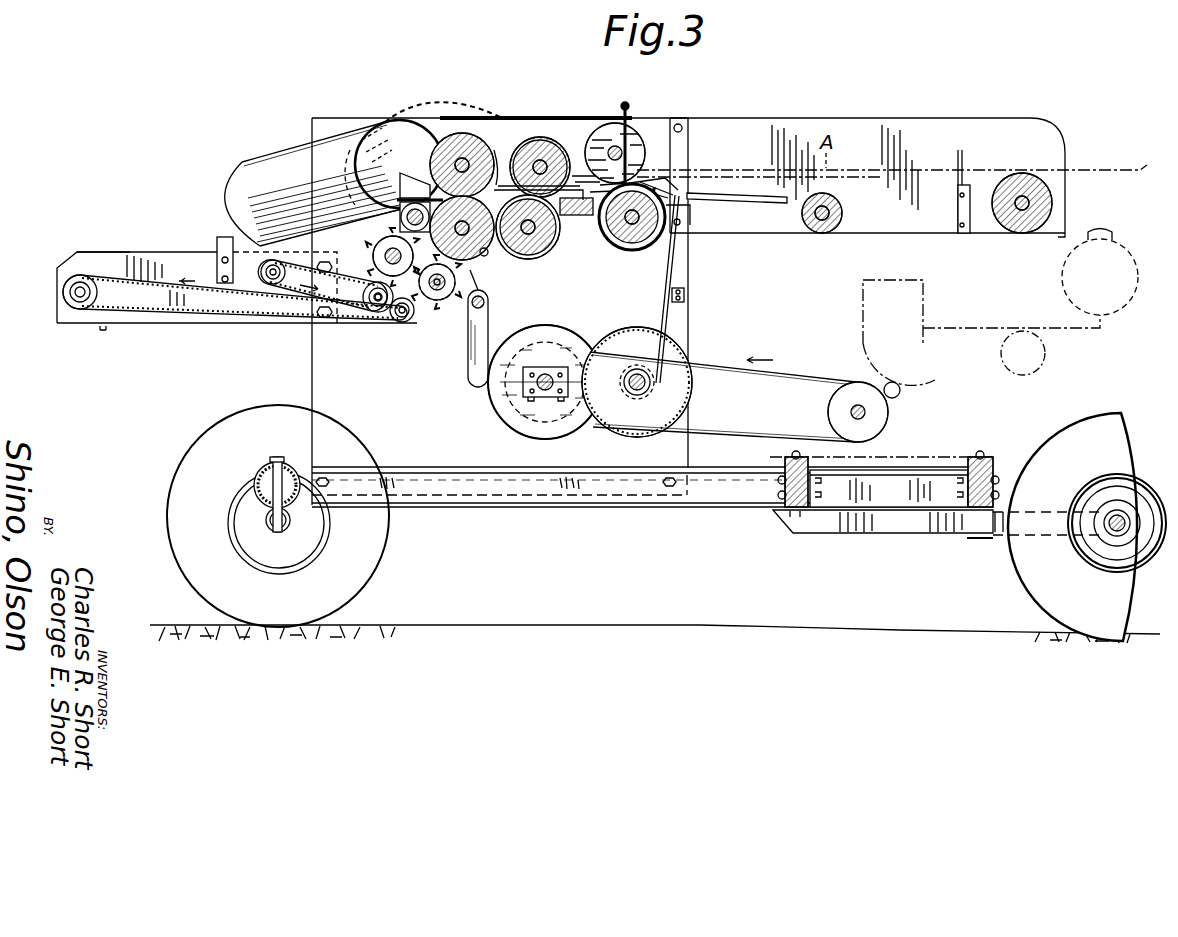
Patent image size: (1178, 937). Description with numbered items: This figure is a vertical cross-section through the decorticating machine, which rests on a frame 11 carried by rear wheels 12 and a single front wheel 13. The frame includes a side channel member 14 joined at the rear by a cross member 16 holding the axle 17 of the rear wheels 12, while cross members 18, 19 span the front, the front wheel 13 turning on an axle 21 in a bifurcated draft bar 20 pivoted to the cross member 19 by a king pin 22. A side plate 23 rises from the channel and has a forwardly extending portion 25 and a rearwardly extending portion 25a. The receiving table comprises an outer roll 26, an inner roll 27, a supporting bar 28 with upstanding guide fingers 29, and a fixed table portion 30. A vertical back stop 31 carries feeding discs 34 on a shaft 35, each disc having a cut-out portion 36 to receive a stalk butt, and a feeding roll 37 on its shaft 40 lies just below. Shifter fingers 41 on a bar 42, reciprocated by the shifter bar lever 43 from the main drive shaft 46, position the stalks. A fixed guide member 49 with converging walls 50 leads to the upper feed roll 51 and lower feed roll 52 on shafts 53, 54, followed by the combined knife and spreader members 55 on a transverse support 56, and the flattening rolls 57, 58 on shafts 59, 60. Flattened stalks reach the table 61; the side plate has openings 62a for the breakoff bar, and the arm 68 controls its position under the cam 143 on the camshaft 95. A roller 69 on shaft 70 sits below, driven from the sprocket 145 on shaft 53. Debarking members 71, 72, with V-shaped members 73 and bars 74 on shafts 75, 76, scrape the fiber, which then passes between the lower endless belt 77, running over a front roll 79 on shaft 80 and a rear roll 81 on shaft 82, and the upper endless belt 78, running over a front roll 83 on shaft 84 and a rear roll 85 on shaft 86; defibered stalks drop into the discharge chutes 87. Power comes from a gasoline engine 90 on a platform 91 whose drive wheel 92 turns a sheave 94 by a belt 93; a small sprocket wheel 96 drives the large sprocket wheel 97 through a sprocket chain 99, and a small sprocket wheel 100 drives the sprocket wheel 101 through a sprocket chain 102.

The frame 11 is at (565, 508).
The rear wheels 12 is at (366, 598).
The front wheel 13 is at (1012, 566).
The side channel member 14 is at (442, 508).
The cross member 16 is at (264, 470).
The axle 17 is at (292, 521).
The cross member 18 is at (994, 463).
The cross member 19 is at (784, 462).
The bifurcated draft bar 20 is at (838, 535).
The axle 21 is at (1105, 527).
The king pin 22 is at (796, 455).
The side plate 23 is at (328, 388).
The forwardly extending portion 25 is at (1043, 132).
The rearwardly extending portion 25a is at (128, 252).
The outer roll 26 is at (1052, 199).
The inner roll 27 is at (843, 210).
The supporting bar 28 is at (958, 178).
The guide fingers 29 is at (963, 160).
The fixed table portion 30 is at (746, 193).
The back stop 31 is at (642, 135).
The feeding discs 34 is at (675, 136).
The shaft 35 is at (625, 104).
The cut-out portions 36 is at (660, 176).
The feeding roll 37 is at (630, 250).
The shaft 40 is at (612, 242).
The shifter fingers 41 is at (672, 188).
The bar 42 is at (680, 212).
The shifter bar lever 43 is at (672, 318).
The main drive shaft 46 is at (632, 393).
The fixed guide member 49 is at (580, 160).
The converging walls 50 is at (609, 130).
The upper feed roll 51 is at (537, 158).
The lower feed roll 52 is at (550, 239).
The shaft 53 is at (556, 140).
The shaft 54 is at (556, 221).
The combined knife and spreader members 55 is at (505, 160).
The transverse support 56 is at (497, 135).
The flattening roll 57 is at (473, 138).
The flattening roll 58 is at (480, 275).
The shaft 59 is at (463, 158).
The shaft 60 is at (486, 257).
The table 61 is at (417, 176).
The openings 62a is at (418, 170).
The arm 68 is at (488, 312).
The roller 69 is at (466, 237).
The shaft 70 is at (462, 228).
The rotary debarking member 71 is at (395, 245).
The rotary debarking member 72 is at (439, 303).
The V-shaped members 73 is at (370, 243).
The bars 74 is at (453, 302).
The shaft 75 is at (393, 256).
The shaft 76 is at (430, 300).
The lower endless belt 77 is at (170, 314).
The upper endless belt 78 is at (302, 264).
The front roll 79 is at (399, 322).
The shaft 80 is at (405, 323).
The rear roll 81 is at (72, 276).
The shaft 82 is at (63, 292).
The front roll 83 is at (370, 304).
The shaft 84 is at (377, 312).
The rear roll 85 is at (262, 268).
The shaft 86 is at (266, 276).
The discharge chutes 87 is at (260, 165).
The gasoline engine 90 is at (936, 378).
The platform 91 is at (950, 470).
The drive wheel 92 is at (846, 397).
The belt 93 is at (703, 362).
The sheave 94 is at (540, 350).
The camshaft 95 is at (544, 392).
The small sprocket wheel 96 is at (552, 365).
The large sprocket wheel 97 is at (680, 380).
The sprocket chain 99 is at (625, 326).
The small sprocket wheel 100 is at (655, 385).
The sprocket wheel 101 is at (544, 360).
The sprocket chain 102 is at (570, 370).
The cam 143 is at (500, 392).
The sprocket 145 is at (546, 118).